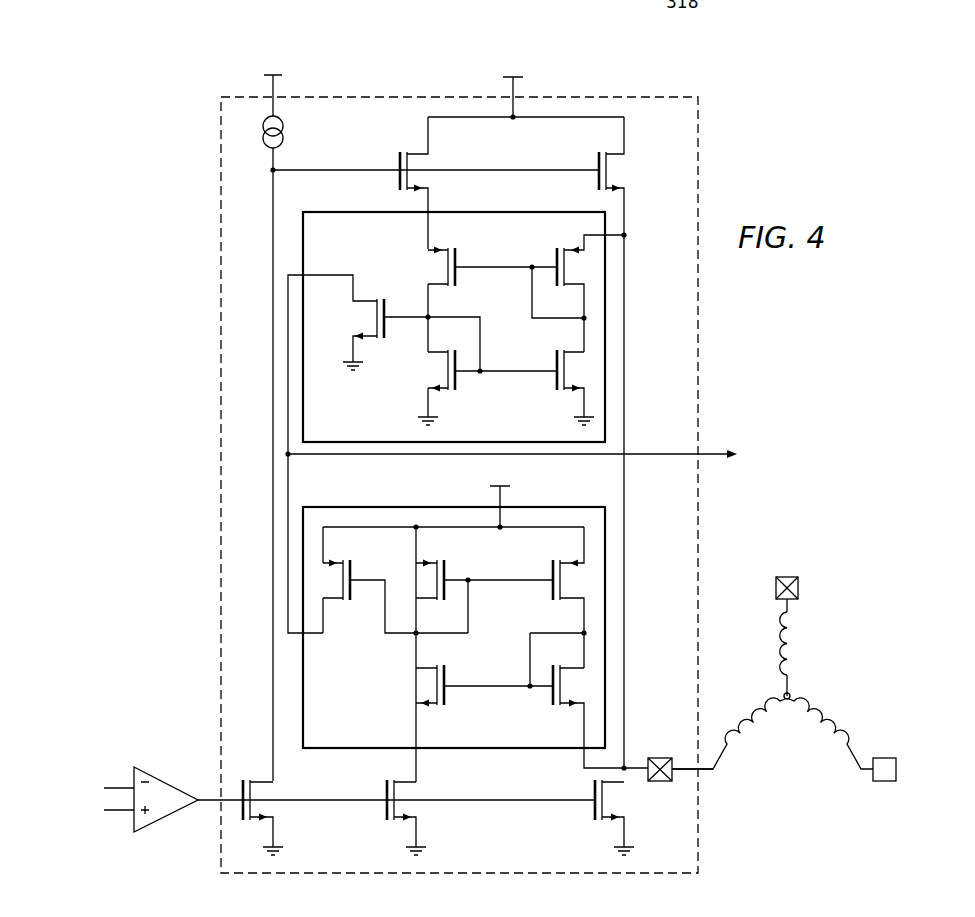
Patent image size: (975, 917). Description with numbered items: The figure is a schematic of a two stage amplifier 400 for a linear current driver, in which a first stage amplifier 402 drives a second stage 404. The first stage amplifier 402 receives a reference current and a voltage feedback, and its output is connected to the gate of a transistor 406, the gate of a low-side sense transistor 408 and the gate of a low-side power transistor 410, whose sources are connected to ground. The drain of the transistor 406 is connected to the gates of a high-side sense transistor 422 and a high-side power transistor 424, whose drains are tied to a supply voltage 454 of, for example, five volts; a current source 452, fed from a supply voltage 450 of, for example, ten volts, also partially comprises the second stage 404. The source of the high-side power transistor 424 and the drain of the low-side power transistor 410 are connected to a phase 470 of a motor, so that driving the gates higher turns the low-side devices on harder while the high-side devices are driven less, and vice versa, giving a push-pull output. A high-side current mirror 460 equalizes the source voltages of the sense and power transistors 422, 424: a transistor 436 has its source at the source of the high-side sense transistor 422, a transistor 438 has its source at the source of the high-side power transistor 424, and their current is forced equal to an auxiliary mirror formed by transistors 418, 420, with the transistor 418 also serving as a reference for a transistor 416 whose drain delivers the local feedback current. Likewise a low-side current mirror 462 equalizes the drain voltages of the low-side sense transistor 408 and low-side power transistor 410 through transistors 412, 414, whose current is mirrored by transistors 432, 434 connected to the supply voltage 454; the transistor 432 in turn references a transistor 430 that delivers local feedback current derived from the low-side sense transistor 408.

The two stage amplifier 400 is at (150, 220).
The first stage amplifier 402 is at (166, 817).
The second stage 404 is at (212, 478).
The transistor 406 is at (262, 778).
The low-side sense transistor 408 is at (384, 812).
The low-side power transistor 410 is at (592, 812).
The transistor 412 is at (449, 682).
The transistor 414 is at (552, 700).
The transistor 416 is at (390, 340).
The transistor 418 is at (460, 390).
The transistor 420 is at (554, 367).
The high-side sense transistor 422 is at (397, 165).
The high-side power transistor 424 is at (596, 165).
The transistor 430 is at (358, 600).
The transistor 432 is at (449, 575).
The transistor 434 is at (552, 592).
The transistor 436 is at (460, 280).
The transistor 438 is at (554, 258).
The supply voltage 450 is at (271, 50).
The current source 452 is at (262, 146).
The supply voltage 454 is at (512, 50).
The high-side current mirror 460 is at (384, 258).
The low-side current mirror 462 is at (378, 714).
The phase 470 is at (657, 757).